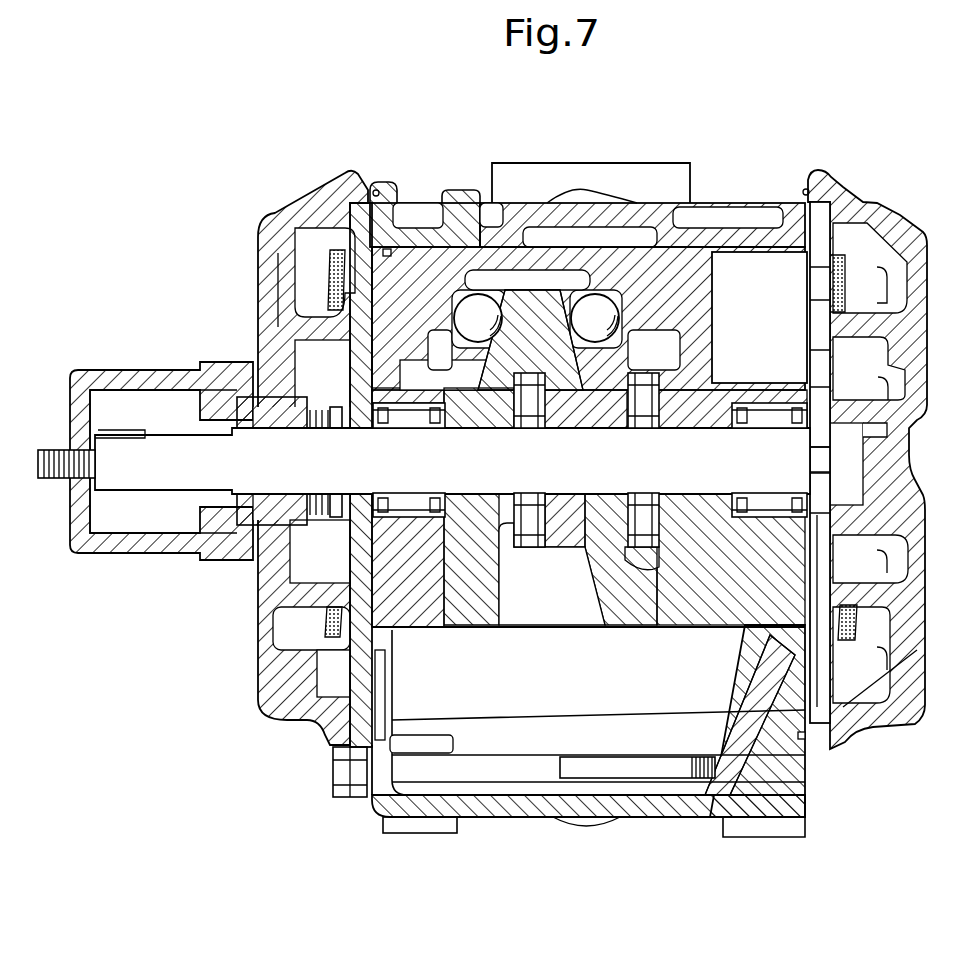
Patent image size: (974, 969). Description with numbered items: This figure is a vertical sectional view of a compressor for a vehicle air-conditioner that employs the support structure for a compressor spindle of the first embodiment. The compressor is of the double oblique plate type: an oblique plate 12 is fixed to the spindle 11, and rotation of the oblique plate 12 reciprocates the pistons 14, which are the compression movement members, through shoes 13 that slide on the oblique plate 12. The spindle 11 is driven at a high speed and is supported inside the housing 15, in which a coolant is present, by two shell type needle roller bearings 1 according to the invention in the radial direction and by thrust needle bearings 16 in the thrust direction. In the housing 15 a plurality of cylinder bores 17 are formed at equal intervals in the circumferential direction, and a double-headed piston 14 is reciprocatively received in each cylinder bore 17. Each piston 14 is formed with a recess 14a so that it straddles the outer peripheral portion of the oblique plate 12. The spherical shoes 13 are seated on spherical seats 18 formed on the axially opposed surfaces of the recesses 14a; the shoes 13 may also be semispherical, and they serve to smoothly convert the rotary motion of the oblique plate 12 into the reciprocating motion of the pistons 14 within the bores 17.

The shell type needle roller bearing 1 is at (432, 527).
The spindle 11 is at (160, 450).
The oblique plate 12 is at (602, 590).
The shoe 13 is at (487, 203).
The piston 14 is at (408, 255).
The recess 14a is at (537, 278).
The housing 15 is at (745, 205).
The thrust needle bearing 16 is at (525, 547).
The cylinder bore 17 is at (765, 280).
The spherical seat 18 is at (478, 308).